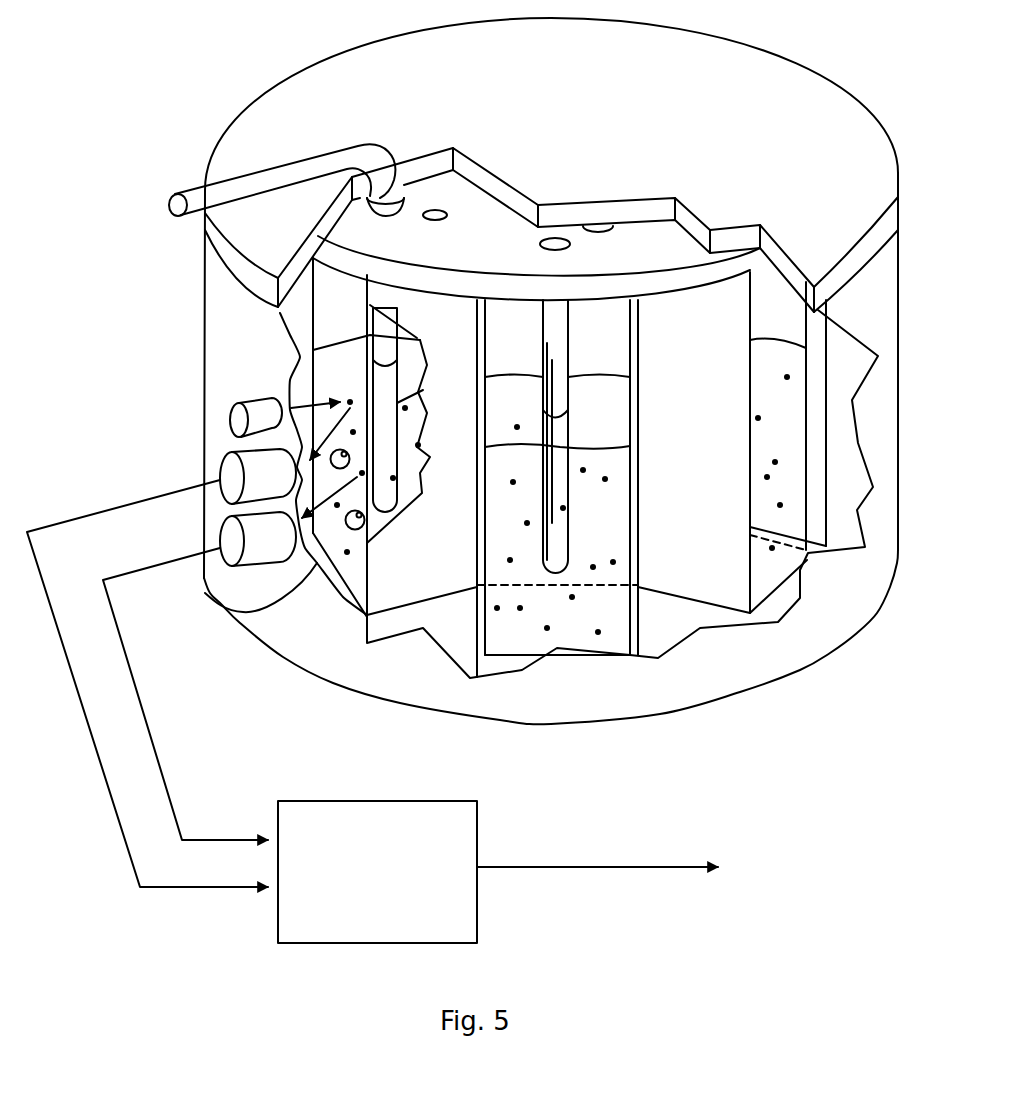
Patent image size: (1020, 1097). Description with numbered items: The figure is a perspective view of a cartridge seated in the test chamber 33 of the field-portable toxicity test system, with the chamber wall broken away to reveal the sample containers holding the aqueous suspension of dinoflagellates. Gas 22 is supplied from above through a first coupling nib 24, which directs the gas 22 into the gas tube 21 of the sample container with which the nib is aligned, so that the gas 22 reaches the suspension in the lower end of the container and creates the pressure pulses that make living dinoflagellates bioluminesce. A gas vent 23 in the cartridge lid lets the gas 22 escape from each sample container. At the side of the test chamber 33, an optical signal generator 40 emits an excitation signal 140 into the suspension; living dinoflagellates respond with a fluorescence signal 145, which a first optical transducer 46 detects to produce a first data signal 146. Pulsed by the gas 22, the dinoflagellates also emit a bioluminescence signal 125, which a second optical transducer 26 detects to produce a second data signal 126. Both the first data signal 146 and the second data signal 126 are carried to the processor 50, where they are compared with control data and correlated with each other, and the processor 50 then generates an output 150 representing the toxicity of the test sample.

The gas tube 21 is at (570, 318).
The gas 22 is at (167, 207).
The gas vent 23 is at (450, 215).
The first coupling nib 24 is at (396, 196).
The second optical transducer 26 is at (220, 548).
The test chamber 33 is at (625, 700).
The optical signal generator 40 is at (230, 421).
The first optical transducer 46 is at (220, 478).
The processor 50 is at (477, 834).
The bioluminescence signal 125 is at (205, 593).
The second data signal 126 is at (170, 797).
The excitation signal 140 is at (300, 367).
The fluorescence signal 145 is at (330, 428).
The first data signal 146 is at (230, 888).
The output 150 is at (652, 870).